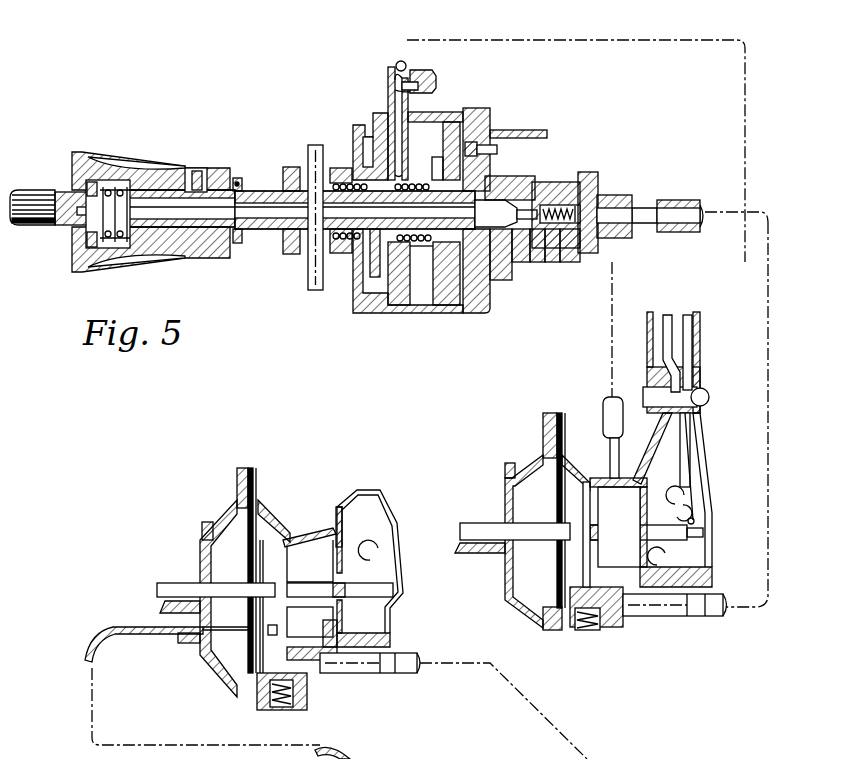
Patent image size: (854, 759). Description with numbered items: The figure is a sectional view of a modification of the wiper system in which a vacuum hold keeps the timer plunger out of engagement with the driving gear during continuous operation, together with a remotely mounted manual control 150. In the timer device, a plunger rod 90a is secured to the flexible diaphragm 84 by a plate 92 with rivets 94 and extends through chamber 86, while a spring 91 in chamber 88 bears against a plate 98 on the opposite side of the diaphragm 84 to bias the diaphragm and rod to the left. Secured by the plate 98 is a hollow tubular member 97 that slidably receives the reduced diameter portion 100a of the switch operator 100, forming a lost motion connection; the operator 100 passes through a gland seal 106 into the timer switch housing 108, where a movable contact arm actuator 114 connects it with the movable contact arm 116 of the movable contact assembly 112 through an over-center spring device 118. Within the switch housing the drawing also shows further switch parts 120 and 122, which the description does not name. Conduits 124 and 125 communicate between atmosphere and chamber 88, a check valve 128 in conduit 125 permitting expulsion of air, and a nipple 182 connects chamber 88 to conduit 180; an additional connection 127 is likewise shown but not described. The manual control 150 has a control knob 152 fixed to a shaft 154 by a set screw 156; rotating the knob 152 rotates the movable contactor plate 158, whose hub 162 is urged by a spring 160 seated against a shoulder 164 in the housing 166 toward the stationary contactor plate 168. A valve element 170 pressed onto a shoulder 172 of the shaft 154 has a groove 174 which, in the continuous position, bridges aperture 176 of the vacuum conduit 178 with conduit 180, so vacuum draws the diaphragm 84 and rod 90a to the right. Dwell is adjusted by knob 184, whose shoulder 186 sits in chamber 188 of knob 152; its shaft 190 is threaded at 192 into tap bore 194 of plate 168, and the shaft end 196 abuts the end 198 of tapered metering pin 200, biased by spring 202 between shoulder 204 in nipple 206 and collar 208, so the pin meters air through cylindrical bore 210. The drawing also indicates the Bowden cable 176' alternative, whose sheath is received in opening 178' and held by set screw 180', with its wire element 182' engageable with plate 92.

The flexible diaphragm 84 is at (567, 462).
The chamber 86 is at (240, 563).
The chamber 88 is at (318, 629).
The plunger rod 90a is at (176, 588).
The spring 91 is at (317, 540).
The plate 92 is at (279, 537).
The rivets 94 is at (263, 580).
The hollow tubular rod-like member 97 is at (323, 587).
The plate 98 is at (288, 537).
The switch operator 100 is at (495, 561).
The reduced diameter portion 100a is at (337, 533).
The gland seal 106 is at (373, 550).
The timer switch housing 108 is at (398, 568).
The movable contact assembly 112 is at (680, 487).
The movable contact arm actuator 114 is at (680, 510).
The movable contact arm 116 is at (682, 435).
The over-center spring device 118 is at (683, 520).
The column rod 120 is at (690, 323).
The tube 122 is at (665, 317).
The conduit 124 is at (313, 660).
The conduit 125 is at (260, 710).
The pipe 127 is at (753, 607).
The check valve 128 is at (305, 710).
The manual control 150 is at (238, 182).
The control knob 152 is at (98, 157).
The shaft 154 is at (248, 192).
The set screw 156 is at (193, 168).
The movable contactor plate 158 is at (487, 128).
The spring 160 is at (495, 128).
The hub 162 is at (437, 253).
The shoulder 164 is at (370, 183).
The housing 166 is at (380, 310).
The stationary contactor plate 168 is at (612, 88).
The valve element 170 is at (378, 125).
The shoulder 172 is at (352, 168).
The groove 174 is at (420, 133).
The aperture 176 is at (428, 100).
The Bowden cable 176' is at (212, 675).
The conduit 178 is at (438, 71).
The opening 178' is at (186, 664).
The conduit 180 is at (592, 134).
The set screw 180' is at (183, 667).
The nipple 182 is at (631, 370).
The movable wire element 182' is at (234, 671).
The knob 184 is at (42, 188).
The shoulder 186 is at (108, 182).
The chamber 188 is at (130, 187).
The shaft 190 is at (210, 213).
The threaded end 192 is at (540, 183).
The tap bore 194 is at (493, 315).
The shaft end 196 is at (513, 252).
The metering pin end 198 is at (533, 252).
The metering pin 200 is at (553, 180).
The spring 202 is at (593, 177).
The shoulder 204 is at (610, 197).
The nipple 206 is at (680, 200).
The collar 208 is at (548, 252).
The cylindrical bore 210 is at (523, 252).